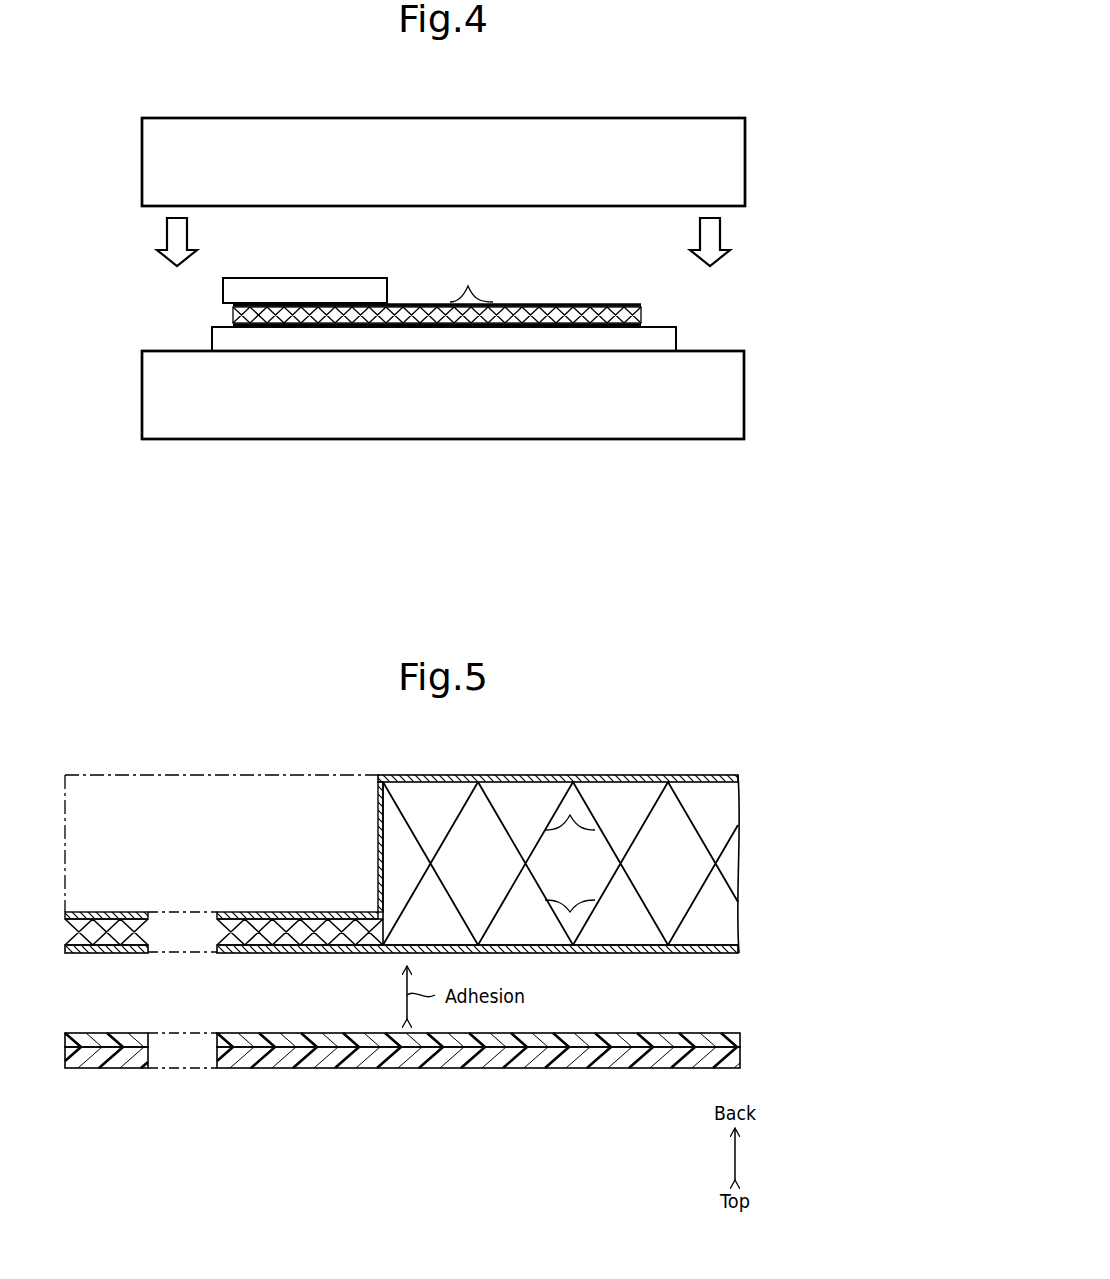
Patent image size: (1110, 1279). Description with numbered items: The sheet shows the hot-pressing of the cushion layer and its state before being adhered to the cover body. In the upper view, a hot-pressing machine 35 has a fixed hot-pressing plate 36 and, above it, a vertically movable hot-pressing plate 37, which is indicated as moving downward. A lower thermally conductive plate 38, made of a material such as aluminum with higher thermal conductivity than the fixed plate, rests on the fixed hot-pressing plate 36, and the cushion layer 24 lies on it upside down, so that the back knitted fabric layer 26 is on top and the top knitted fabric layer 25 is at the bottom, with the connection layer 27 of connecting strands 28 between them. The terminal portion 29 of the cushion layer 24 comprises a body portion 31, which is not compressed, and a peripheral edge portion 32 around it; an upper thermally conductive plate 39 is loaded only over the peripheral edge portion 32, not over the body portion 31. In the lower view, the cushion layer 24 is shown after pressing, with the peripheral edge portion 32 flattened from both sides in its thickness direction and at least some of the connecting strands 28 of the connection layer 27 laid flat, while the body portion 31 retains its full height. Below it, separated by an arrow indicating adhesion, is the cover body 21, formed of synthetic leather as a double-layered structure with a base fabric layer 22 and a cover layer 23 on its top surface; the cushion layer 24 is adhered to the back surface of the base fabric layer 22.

In FIG. 5, the cover body 21 is at (451, 1051).
In FIG. 5, the base fabric layer 22 is at (740, 1037).
In FIG. 5, the cover layer 23 is at (740, 1060).
In FIG. 4, the cushion layer 24 is at (498, 310).
In FIG. 5, the cushion layer 24 is at (453, 864).
In FIG. 4, the top knitted fabric layer 25 is at (641, 327).
In FIG. 5, the top knitted fabric layer 25 is at (429, 921).
In FIG. 4, the back knitted fabric layer 26 is at (641, 303).
In FIG. 5, the back knitted fabric layer 26 is at (717, 782).
In FIG. 4, the connection layer 27 is at (641, 315).
In FIG. 5, the connection layer 27 is at (727, 860).
In FIG. 4, the connecting strands 28 is at (471, 281).
In FIG. 5, the connecting strands 28 is at (570, 863).
In FIG. 4, the terminal portion 29 is at (327, 377).
In FIG. 5, the terminal portion 29 is at (224, 850).
In FIG. 4, the body portion 31 is at (422, 328).
In FIG. 5, the body portion 31 is at (378, 843).
In FIG. 4, the peripheral edge portion 32 is at (322, 328).
In FIG. 5, the peripheral edge portion 32 is at (221, 894).
In FIG. 4, the hot-pressing machine 35 is at (750, 112).
In FIG. 4, the fixed hot-pressing plate 36 is at (744, 390).
In FIG. 4, the movable hot-pressing plate 37 is at (745, 157).
In FIG. 4, the lower thermally conductive plate 38 is at (212, 339).
In FIG. 4, the upper thermally conductive plate 39 is at (223, 291).